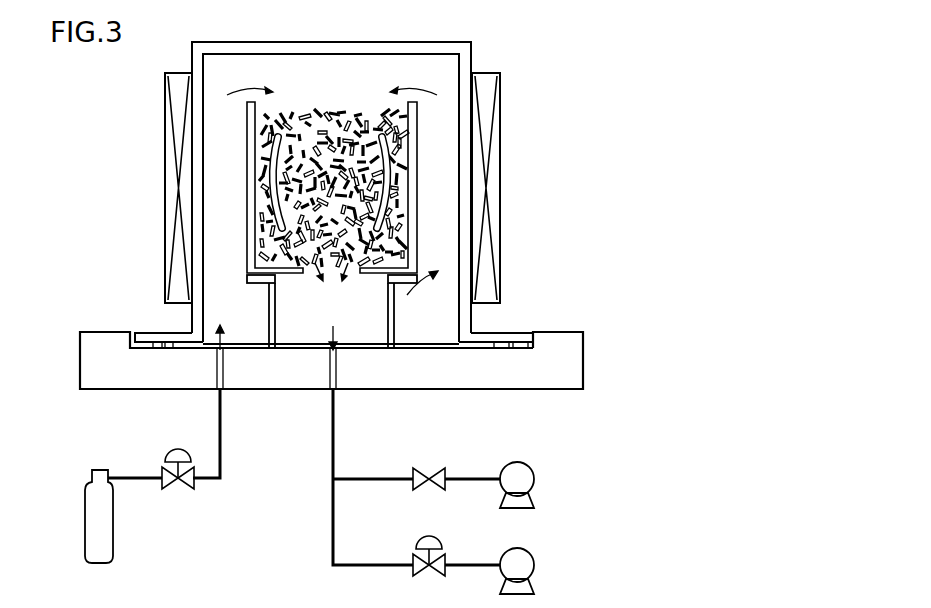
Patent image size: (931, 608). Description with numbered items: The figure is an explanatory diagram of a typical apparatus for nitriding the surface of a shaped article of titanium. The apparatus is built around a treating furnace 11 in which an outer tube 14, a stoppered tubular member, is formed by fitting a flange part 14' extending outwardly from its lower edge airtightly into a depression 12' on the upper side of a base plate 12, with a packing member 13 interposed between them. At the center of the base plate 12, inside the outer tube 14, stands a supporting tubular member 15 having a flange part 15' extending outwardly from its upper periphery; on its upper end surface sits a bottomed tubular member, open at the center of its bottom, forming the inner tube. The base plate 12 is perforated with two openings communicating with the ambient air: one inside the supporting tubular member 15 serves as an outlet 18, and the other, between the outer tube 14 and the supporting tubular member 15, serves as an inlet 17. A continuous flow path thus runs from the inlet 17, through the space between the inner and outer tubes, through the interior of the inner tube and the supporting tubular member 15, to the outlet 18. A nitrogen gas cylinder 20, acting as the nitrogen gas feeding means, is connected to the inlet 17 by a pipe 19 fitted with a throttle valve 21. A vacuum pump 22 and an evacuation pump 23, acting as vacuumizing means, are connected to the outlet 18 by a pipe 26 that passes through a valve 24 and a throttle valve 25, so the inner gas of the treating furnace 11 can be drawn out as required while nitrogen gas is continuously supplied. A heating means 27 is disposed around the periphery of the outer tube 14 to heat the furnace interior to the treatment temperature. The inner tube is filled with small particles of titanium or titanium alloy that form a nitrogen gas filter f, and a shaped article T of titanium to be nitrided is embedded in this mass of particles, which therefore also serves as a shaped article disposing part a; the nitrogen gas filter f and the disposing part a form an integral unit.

The treating furnace 11 is at (408, 43).
The outer tube 14 is at (331, 173).
The flange part 14' is at (342, 296).
The packing member 13 is at (160, 344).
The base plate 12 is at (365, 361).
The depression 12' is at (566, 311).
The heating means 27 is at (165, 180).
The shaped article disposing part a is at (262, 203).
The nitrogen gas filter f is at (258, 122).
The shaped article of titanium T is at (265, 172).
The supporting tubular member 15 is at (331, 315).
The flange part 15' is at (333, 262).
The inlet 17 is at (227, 345).
The outlet 18 is at (337, 346).
The pipe 19 is at (222, 440).
The nitrogen gas cylinder 20 is at (86, 530).
The throttle valve 21 is at (173, 492).
The pipe 26 is at (336, 443).
The valve 24 is at (432, 470).
The vacuum pump 22 is at (533, 470).
The throttle valve 25 is at (446, 556).
The evacuation pump 23 is at (533, 557).